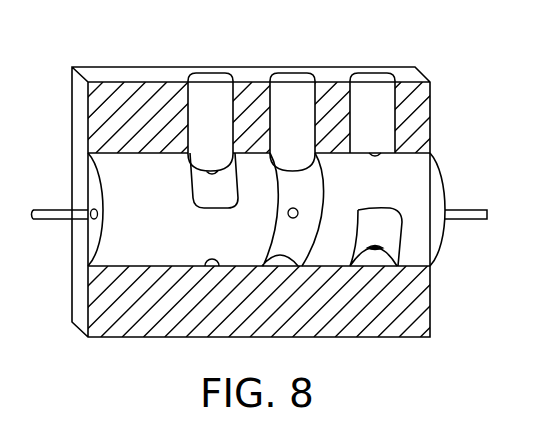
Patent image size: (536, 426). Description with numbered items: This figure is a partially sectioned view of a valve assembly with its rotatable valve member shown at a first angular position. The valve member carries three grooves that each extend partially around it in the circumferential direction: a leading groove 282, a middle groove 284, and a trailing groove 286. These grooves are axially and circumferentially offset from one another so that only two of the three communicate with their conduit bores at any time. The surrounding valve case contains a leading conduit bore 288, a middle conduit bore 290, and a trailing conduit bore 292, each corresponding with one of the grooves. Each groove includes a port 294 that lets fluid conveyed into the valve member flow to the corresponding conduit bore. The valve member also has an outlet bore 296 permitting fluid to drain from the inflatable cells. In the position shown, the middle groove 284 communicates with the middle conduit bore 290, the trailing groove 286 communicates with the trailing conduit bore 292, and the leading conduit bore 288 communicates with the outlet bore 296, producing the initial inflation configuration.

The leading groove 282 is at (362, 207).
The middle groove 284 is at (272, 223).
The trailing groove 286 is at (193, 190).
The leading conduit bore 288 is at (376, 72).
The middle conduit bore 290 is at (297, 72).
The trailing conduit bore 292 is at (207, 72).
The port 294 is at (288, 210).
The outlet bore 296 is at (376, 157).